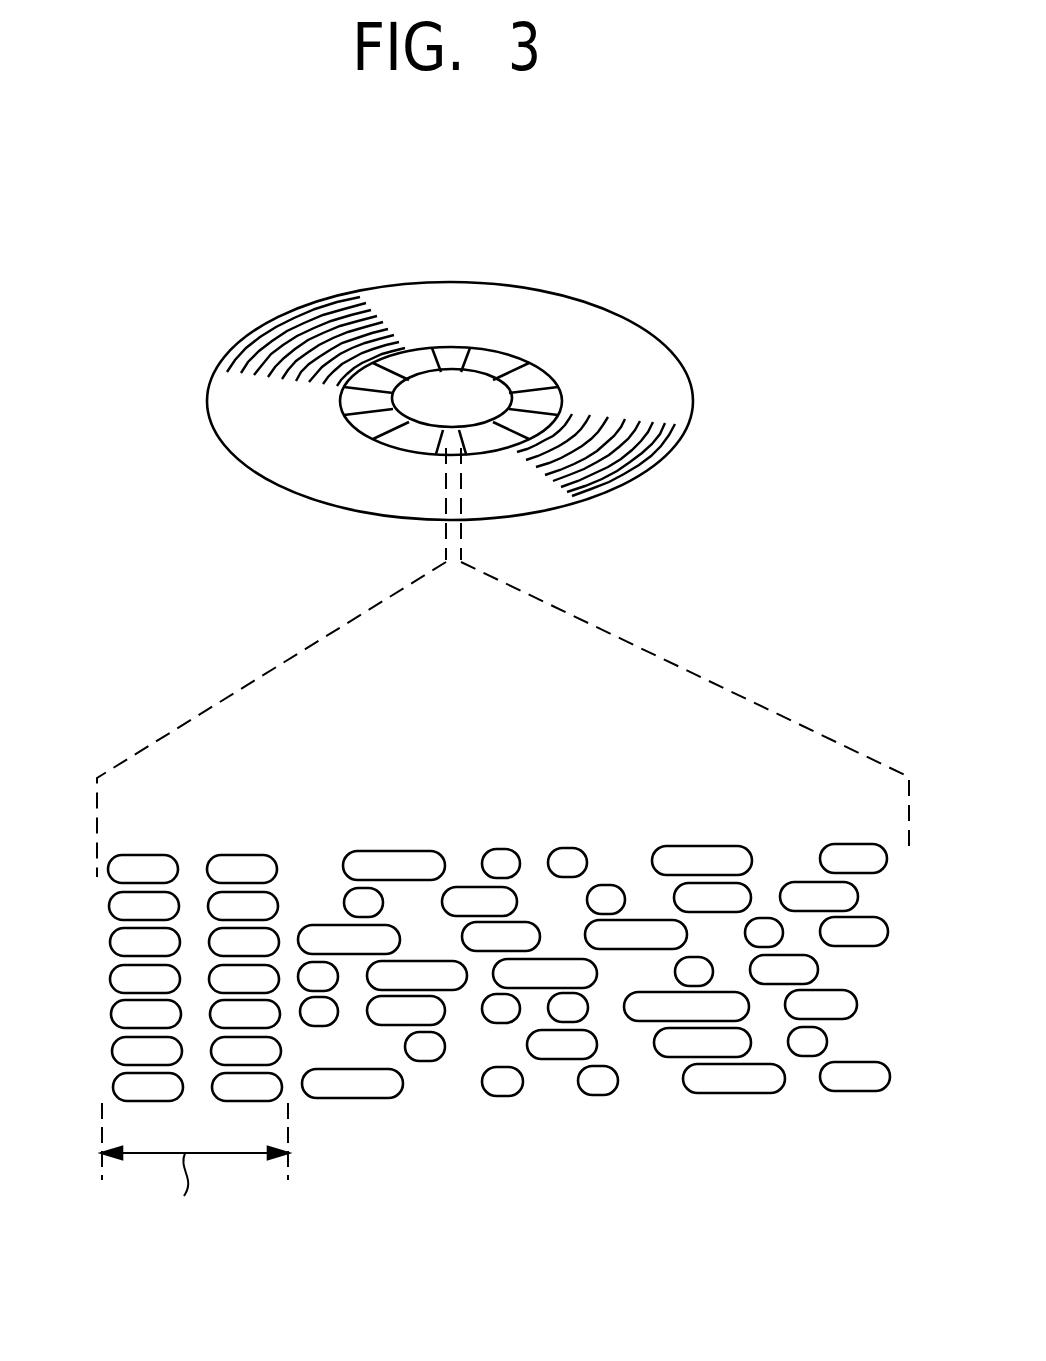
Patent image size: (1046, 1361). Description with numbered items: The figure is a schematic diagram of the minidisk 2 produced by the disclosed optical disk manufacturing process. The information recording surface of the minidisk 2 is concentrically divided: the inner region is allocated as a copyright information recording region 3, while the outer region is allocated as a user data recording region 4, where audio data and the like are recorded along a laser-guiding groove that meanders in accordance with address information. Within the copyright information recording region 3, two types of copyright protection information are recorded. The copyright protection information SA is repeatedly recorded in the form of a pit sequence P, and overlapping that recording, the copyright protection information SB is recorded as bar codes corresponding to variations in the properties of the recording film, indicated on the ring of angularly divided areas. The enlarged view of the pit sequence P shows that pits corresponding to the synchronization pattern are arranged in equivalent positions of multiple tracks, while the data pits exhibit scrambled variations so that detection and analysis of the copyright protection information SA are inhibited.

The minidisk 2 is at (573, 298).
The copyright information recording region 3 is at (420, 413).
The user data recording region 4 is at (480, 300).
The copyright protection information SB is at (358, 428).
The pit sequence P is at (585, 1148).
The copyright protection information SA is at (216, 1067).